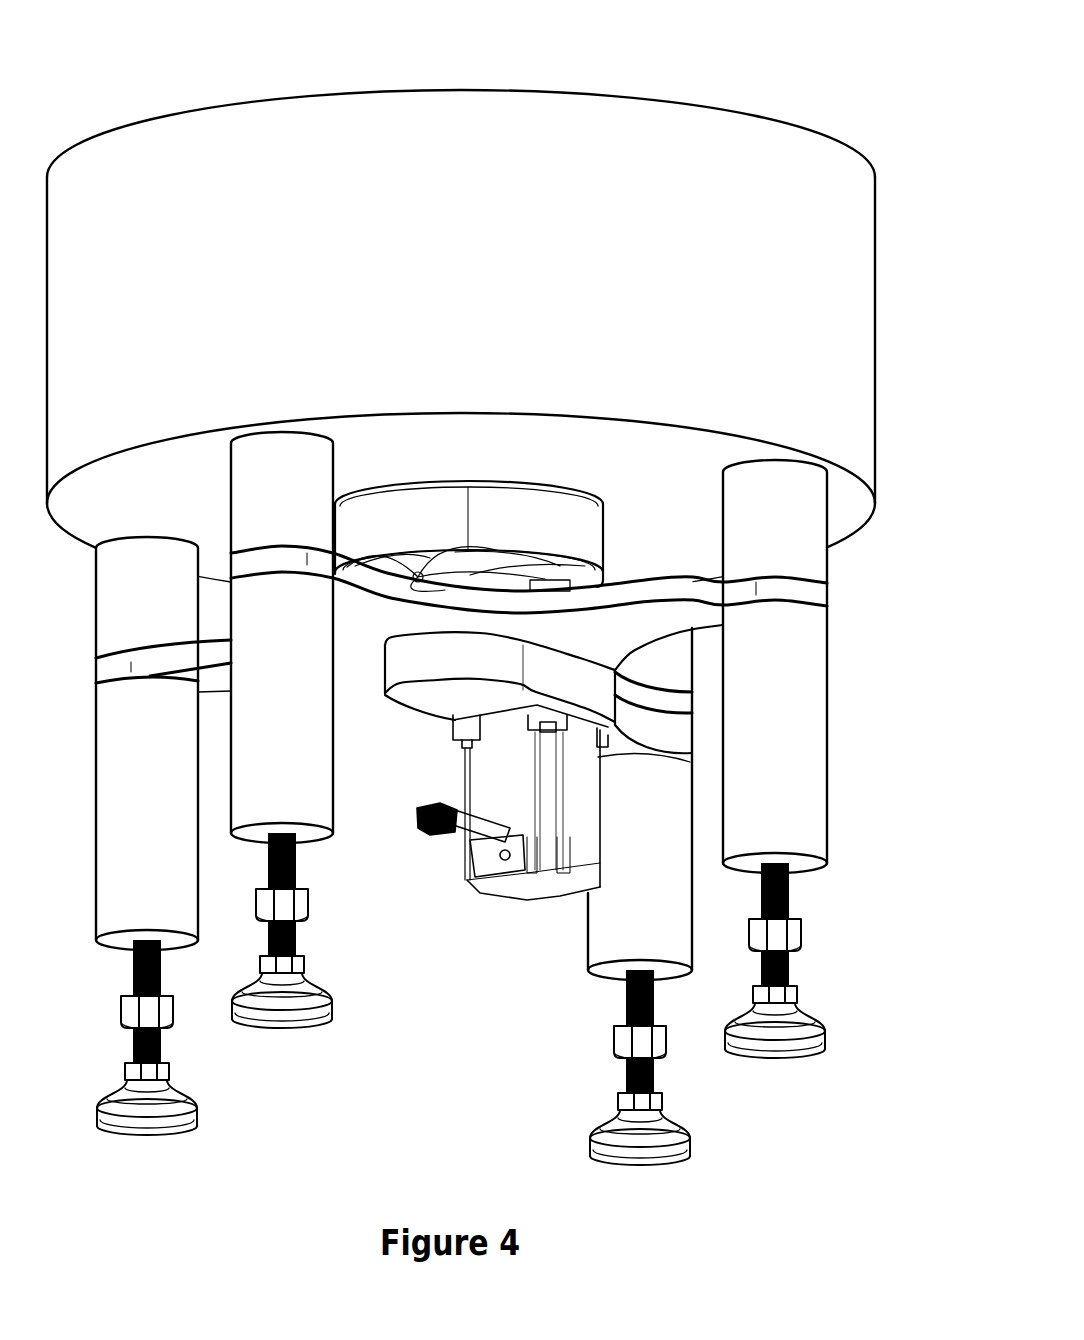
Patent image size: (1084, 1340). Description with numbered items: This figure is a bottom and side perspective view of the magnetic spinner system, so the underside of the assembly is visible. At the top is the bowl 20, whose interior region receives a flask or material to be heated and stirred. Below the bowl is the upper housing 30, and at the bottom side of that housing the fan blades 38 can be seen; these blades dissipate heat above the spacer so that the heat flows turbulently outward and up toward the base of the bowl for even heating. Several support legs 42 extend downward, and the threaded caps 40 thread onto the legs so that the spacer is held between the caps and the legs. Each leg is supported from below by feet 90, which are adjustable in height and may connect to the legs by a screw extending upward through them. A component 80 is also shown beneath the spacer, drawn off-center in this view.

The bowl 20 is at (610, 145).
The upper housing 30 is at (528, 512).
The fan blades 38 is at (555, 577).
The cap 40 is at (798, 533).
The support leg 42 is at (805, 752).
The control module 80 is at (502, 770).
The feet 90 is at (668, 1126).